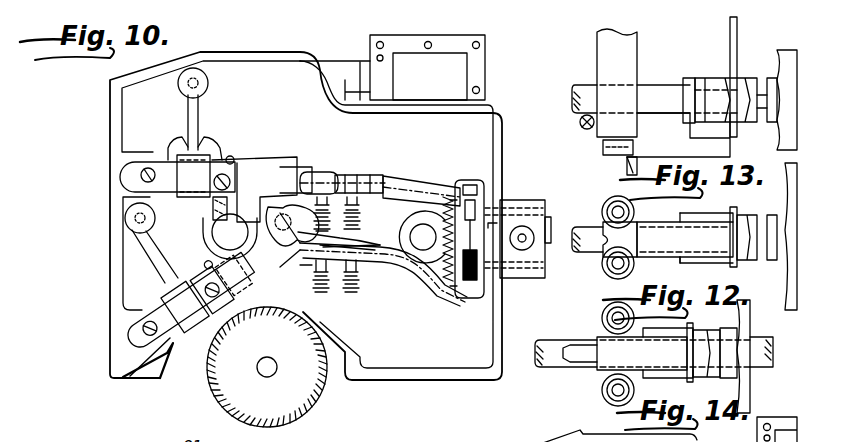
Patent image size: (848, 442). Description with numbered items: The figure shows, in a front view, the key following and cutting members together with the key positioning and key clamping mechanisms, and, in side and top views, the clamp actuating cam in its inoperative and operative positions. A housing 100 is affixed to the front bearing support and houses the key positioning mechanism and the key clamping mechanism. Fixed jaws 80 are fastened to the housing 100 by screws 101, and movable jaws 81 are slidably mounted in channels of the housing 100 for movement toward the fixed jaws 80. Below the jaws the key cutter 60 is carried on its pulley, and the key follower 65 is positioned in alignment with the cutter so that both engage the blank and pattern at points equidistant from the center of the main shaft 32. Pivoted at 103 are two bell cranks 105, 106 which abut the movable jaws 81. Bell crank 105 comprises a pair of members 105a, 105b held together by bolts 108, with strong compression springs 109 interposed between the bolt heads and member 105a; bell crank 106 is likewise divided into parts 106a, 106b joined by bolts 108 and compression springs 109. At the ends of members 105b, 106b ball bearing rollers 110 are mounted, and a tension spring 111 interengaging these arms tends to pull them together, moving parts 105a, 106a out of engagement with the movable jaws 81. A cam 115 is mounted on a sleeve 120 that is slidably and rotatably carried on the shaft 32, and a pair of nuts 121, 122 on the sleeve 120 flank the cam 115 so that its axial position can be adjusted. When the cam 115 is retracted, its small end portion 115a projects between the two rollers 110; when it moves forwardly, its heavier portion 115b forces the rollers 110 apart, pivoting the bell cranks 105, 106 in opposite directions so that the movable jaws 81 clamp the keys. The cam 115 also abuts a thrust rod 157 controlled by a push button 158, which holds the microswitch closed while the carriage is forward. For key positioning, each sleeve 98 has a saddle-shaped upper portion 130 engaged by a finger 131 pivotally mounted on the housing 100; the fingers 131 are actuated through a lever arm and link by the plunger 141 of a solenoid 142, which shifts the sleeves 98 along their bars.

In FIG. 10, the housing 100 is at (268, 58).
In FIG. 14, the housing 100 is at (580, 437).
In FIG. 10, the plunger 141 is at (355, 62).
In FIG. 14, the plunger 141 is at (721, 433).
In FIG. 10, the solenoid 142 is at (482, 63).
In FIG. 14, the solenoid 142 is at (778, 420).
In FIG. 10, the finger 131 is at (188, 117).
In FIG. 10, the saddle-shaped upper portion 130 is at (207, 148).
In FIG. 10, the screws 101 is at (141, 175).
In FIG. 10, the fixed jaw 80 is at (212, 205).
In FIG. 10, the pivot 103 is at (282, 215).
In FIG. 10, the movable jaw 81 is at (292, 183).
In FIG. 10, the key follower 65 is at (218, 236).
In FIG. 10, the sleeve 98 is at (178, 303).
In FIG. 10, the bell crank part 106a is at (290, 259).
In FIG. 10, the bell crank 105 is at (341, 177).
In FIG. 10, the bell crank member 105a is at (368, 197).
In FIG. 10, the bell crank member 105b is at (400, 190).
In FIG. 10, the bolts 108 is at (323, 297).
In FIG. 10, the bell crank 106 is at (373, 289).
In FIG. 10, the compression springs 109 is at (363, 280).
In FIG. 10, the bell crank part 106b is at (453, 295).
In FIG. 10, the main shaft 32 is at (412, 237).
In FIG. 13, the main shaft 32 is at (652, 90).
In FIG. 10, the tension spring 111 is at (438, 267).
In FIG. 13, the tension spring 111 is at (580, 122).
In FIG. 10, the ball bearing rollers 110 is at (473, 202).
In FIG. 13, the ball bearing rollers 110 is at (602, 147).
In FIG. 12, the ball bearing rollers 110 is at (602, 203).
In FIG. 14, the ball bearing rollers 110 is at (603, 322).
In FIG. 10, the push button 158 is at (527, 242).
In FIG. 10, the thrust rod 157 is at (497, 223).
In FIG. 13, the thrust rod 157 is at (630, 157).
In FIG. 10, the key cutter 60 is at (302, 418).
In FIG. 13, the sleeve 120 is at (713, 80).
In FIG. 13, the nut 121 is at (690, 80).
In FIG. 13, the nut 122 is at (747, 80).
In FIG. 13, the cam 115 is at (627, 168).
In FIG. 12, the small end portion 115a is at (602, 240).
In FIG. 14, the small end portion 115a is at (576, 358).
In FIG. 14, the heavier portion 115b is at (667, 362).